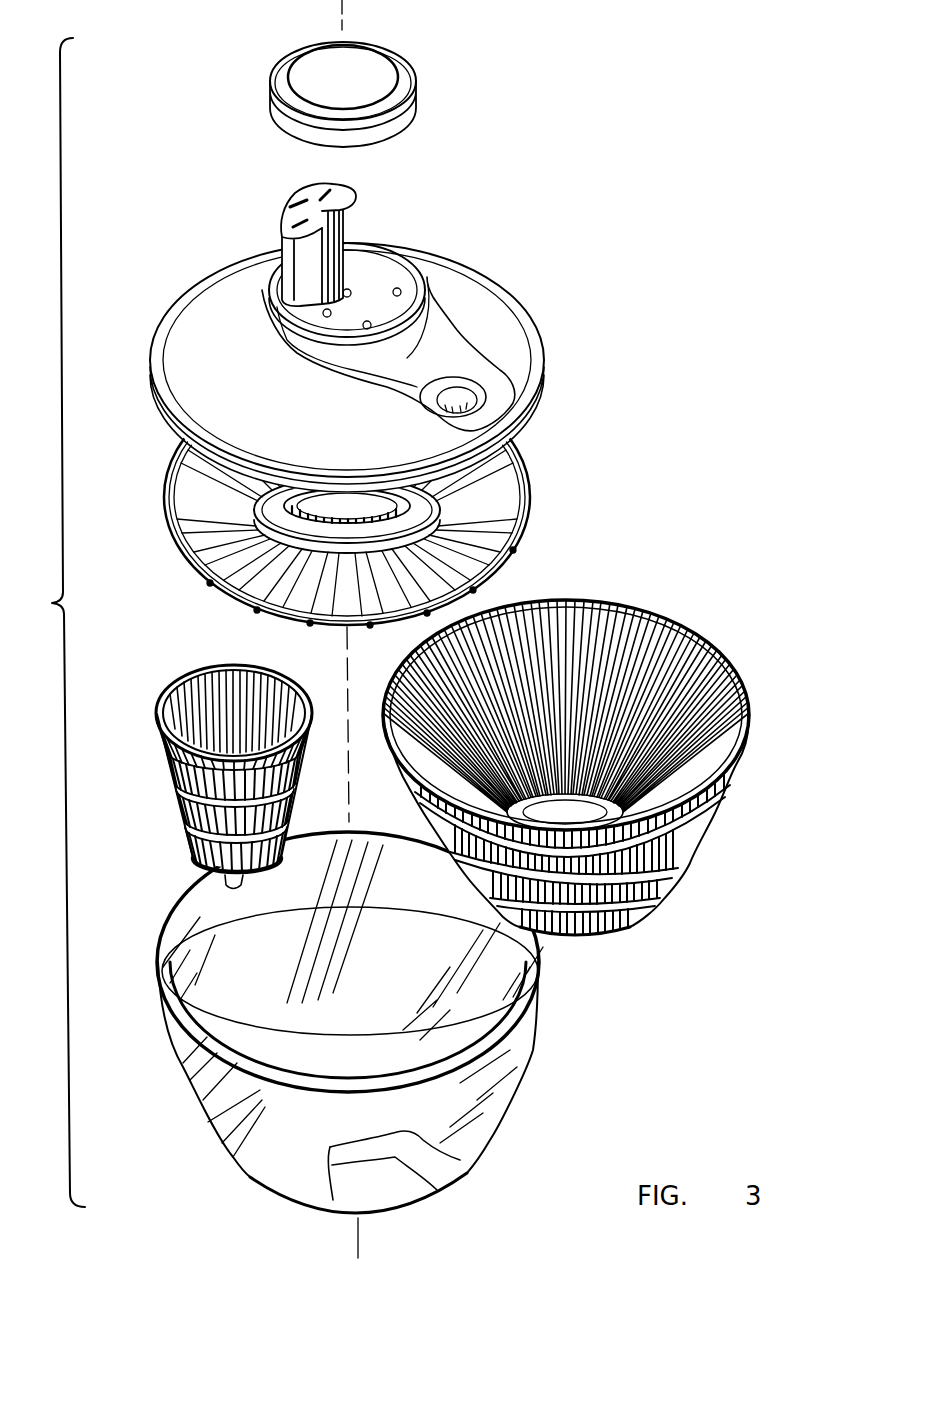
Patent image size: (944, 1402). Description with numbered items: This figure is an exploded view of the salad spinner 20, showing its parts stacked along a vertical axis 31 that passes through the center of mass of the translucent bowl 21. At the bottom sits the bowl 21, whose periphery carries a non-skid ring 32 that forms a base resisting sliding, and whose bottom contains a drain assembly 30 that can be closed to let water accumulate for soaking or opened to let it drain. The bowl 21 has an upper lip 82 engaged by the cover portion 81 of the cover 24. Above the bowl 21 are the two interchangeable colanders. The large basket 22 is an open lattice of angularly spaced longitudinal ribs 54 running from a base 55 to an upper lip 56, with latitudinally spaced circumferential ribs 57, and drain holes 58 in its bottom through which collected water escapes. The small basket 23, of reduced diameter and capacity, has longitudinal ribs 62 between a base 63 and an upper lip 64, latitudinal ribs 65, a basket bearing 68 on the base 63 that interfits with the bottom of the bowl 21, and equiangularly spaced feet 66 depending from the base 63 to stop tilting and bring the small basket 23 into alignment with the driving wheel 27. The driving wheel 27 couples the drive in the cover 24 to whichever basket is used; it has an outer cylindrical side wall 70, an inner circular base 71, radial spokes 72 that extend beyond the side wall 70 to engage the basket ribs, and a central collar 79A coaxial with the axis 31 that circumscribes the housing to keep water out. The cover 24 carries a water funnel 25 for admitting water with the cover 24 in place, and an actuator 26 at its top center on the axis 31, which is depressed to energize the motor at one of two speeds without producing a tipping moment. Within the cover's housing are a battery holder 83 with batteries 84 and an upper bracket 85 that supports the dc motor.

The salad spinner 20 is at (52, 622).
The bowl 21 is at (507, 1058).
The large basket 22 is at (688, 620).
The small basket 23 is at (177, 677).
The cover 24 is at (493, 290).
The water funnel 25 is at (477, 400).
The actuator 26 is at (283, 82).
The driving wheel 27 is at (530, 518).
The drain assembly 30 is at (440, 1190).
The vertical axis 31 is at (343, 1).
The non-skid ring 32 is at (257, 1187).
The longitudinal ribs 54 is at (600, 598).
The base 55 is at (600, 923).
The upper lip 56 is at (723, 803).
The circumferential ribs 57 is at (677, 880).
The drain holes 58 is at (580, 783).
The longitudinal ribs 62 is at (241, 667).
The base 63 is at (197, 867).
The upper lip 64 is at (168, 740).
The latitudinal ribs 65 is at (172, 792).
The feet 66 is at (230, 890).
The basket bearing 68 is at (183, 843).
The outer cylindrical side wall 70 is at (222, 563).
The inner circular base 71 is at (437, 501).
The radial spokes 72 is at (483, 507).
The central collar 79A is at (188, 543).
The cover portion 81 is at (150, 400).
The upper lip 82 is at (537, 990).
The battery holder 83 is at (349, 192).
The batteries 84 is at (350, 224).
The upper bracket 85 is at (390, 285).